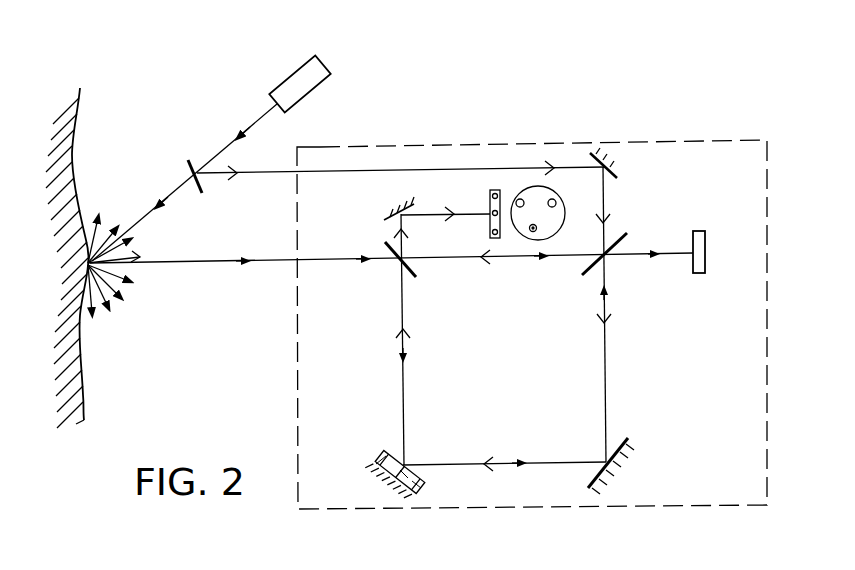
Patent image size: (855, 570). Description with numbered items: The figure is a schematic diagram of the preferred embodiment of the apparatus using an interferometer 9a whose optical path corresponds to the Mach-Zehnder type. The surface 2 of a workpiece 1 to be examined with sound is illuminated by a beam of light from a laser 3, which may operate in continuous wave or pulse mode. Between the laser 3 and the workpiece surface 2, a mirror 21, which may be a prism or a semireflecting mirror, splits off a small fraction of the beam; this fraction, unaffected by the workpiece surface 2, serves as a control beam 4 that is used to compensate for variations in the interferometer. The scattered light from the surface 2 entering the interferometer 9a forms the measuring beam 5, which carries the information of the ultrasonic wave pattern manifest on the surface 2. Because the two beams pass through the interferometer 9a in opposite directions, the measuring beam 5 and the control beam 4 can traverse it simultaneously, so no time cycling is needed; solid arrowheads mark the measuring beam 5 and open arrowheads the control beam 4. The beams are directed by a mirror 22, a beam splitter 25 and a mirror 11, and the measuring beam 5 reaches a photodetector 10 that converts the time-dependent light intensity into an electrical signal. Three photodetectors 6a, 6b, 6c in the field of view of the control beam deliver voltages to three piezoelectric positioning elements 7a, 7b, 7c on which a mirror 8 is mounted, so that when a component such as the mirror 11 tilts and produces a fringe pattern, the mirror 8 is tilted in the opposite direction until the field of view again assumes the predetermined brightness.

The workpiece 1 is at (68, 90).
The surface 2 is at (83, 103).
The laser 3 is at (316, 68).
The control beam 4 is at (268, 173).
The measuring beam 5 is at (165, 266).
The photodetector 6a is at (495, 195).
The photodetector 6b is at (488, 207).
The photodetector 6c is at (533, 232).
The piezoelectric positioning element 7a is at (388, 462).
The piezoelectric positioning element 7b is at (419, 486).
The piezoelectric positioning element 7c is at (408, 469).
The mirror 8 is at (391, 458).
The interferometer 9a is at (708, 155).
The photodetector 10 is at (705, 252).
The mirror 11 is at (628, 440).
The mirror 21 is at (188, 173).
The mirror 22 is at (608, 165).
The beam splitter 25 is at (397, 272).